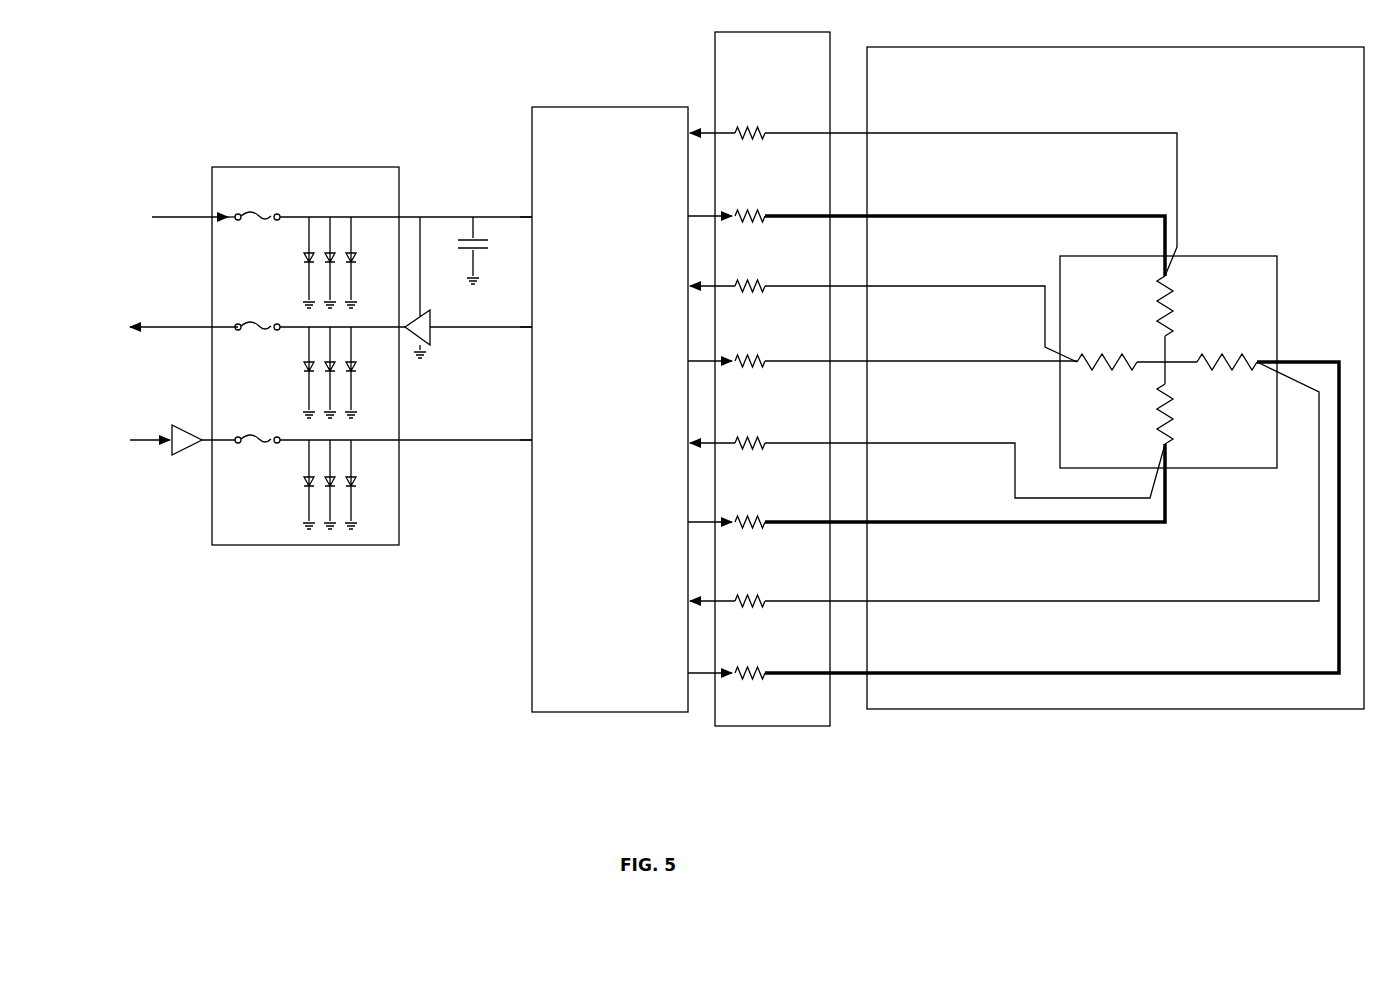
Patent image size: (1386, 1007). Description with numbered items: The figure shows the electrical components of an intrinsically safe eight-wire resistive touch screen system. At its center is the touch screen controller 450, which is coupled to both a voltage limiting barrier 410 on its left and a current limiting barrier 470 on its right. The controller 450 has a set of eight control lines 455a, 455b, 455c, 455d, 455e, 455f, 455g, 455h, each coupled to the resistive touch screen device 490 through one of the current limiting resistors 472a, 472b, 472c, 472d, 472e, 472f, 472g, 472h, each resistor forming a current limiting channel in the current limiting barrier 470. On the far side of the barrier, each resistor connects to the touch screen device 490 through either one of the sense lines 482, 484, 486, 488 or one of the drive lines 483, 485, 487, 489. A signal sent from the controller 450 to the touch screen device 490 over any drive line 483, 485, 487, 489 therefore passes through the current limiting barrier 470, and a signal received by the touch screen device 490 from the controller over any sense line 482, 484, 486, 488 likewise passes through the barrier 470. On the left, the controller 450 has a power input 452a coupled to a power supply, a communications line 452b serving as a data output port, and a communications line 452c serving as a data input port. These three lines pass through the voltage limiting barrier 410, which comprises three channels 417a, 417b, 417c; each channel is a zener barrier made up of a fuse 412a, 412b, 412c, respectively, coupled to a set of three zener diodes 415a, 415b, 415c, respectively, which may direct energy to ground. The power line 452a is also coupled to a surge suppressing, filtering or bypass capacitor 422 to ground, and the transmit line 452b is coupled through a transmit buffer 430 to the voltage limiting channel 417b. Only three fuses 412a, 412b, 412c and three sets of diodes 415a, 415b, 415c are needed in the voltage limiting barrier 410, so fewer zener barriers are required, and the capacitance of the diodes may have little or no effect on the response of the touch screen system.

The voltage limiting barrier 410 is at (335, 550).
The fuse 412a is at (262, 212).
The fuse 412b is at (262, 322).
The fuse 412c is at (262, 435).
The zener diodes 415a is at (303, 258).
The zener diodes 415b is at (303, 367).
The zener diodes 415c is at (303, 482).
The channel 417a is at (370, 212).
The channel 417b is at (370, 322).
The channel 417c is at (370, 435).
The capacitor 422 is at (485, 232).
The transmit buffer 430 is at (432, 310).
The touch screen controller 450 is at (650, 714).
The power input 452a is at (535, 215).
The communications line 452b is at (535, 325).
The communications line 452c is at (535, 438).
The control line 455a is at (688, 133).
The control line 455b is at (688, 216).
The control line 455c is at (688, 286).
The control line 455d is at (688, 361).
The control line 455e is at (688, 443).
The control line 455f is at (688, 522).
The control line 455g is at (688, 601).
The control line 455h is at (688, 673).
The current limiting barrier 470 is at (800, 728).
The current limiting resistor 472a is at (757, 125).
The current limiting resistor 472b is at (757, 208).
The current limiting resistor 472c is at (757, 278).
The current limiting resistor 472d is at (757, 352).
The current limiting resistor 472e is at (757, 435).
The current limiting resistor 472f is at (757, 514).
The current limiting resistor 472g is at (757, 593).
The current limiting resistor 472h is at (757, 665).
The sense line 482 is at (945, 130).
The drive line 483 is at (945, 213).
The sense line 484 is at (945, 283).
The drive line 485 is at (945, 358).
The sense line 486 is at (945, 440).
The drive line 487 is at (945, 518).
The sense line 488 is at (945, 598).
The drive line 489 is at (945, 670).
The resistive touch screen device 490 is at (1130, 712).